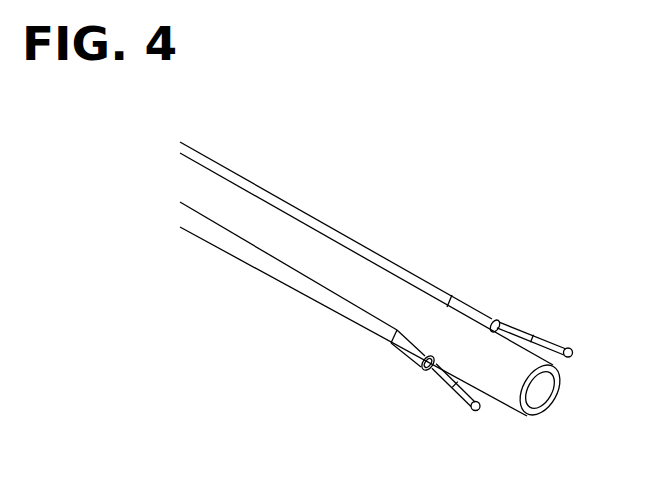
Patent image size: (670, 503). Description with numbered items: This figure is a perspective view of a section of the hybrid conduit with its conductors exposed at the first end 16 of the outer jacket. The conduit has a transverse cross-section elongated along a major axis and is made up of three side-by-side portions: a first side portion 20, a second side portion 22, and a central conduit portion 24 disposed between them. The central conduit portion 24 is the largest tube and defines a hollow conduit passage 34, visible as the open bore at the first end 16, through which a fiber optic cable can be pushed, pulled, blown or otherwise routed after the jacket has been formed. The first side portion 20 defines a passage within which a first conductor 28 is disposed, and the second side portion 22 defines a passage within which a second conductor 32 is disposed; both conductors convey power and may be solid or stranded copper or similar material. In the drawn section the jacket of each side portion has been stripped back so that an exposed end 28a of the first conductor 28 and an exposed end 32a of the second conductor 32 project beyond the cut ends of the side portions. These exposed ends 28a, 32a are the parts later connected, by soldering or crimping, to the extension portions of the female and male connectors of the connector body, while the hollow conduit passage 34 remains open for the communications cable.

The first end 16 is at (522, 414).
The first side portion 20 is at (310, 291).
The second side portion 22 is at (473, 308).
The central conduit portion 24 is at (415, 298).
The first conductor 28 is at (428, 372).
The exposed end of the first conductor 28a is at (470, 409).
The second conductor 32 is at (534, 334).
The exposed end of the second conductor 32a is at (573, 351).
The hollow conduit passage 34 is at (538, 388).